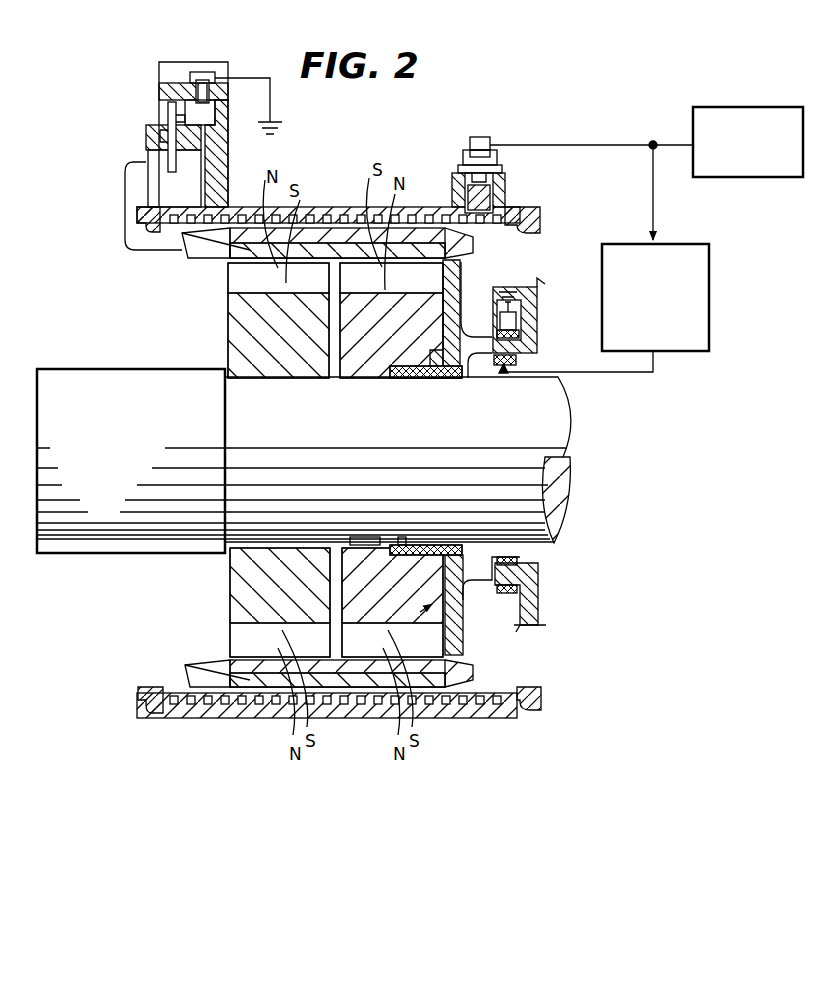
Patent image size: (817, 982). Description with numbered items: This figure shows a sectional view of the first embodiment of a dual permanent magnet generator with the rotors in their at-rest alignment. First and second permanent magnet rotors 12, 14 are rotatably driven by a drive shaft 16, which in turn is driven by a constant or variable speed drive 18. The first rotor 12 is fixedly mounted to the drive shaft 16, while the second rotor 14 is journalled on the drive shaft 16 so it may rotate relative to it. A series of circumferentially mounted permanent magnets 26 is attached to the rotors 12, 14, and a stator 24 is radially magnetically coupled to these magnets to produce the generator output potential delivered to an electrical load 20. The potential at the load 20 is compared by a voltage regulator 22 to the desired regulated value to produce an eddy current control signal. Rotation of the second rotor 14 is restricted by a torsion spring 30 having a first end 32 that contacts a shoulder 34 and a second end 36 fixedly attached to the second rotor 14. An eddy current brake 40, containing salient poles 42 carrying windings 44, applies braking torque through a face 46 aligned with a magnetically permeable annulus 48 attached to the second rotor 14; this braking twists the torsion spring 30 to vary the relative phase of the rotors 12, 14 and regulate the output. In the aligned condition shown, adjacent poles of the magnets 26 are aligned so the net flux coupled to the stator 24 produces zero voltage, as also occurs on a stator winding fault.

The first permanent magnet rotor 12 is at (226, 333).
The second permanent magnet rotor 14 is at (466, 644).
The drive shaft 16 is at (566, 456).
The constant or variable speed drive 18 is at (94, 530).
The electrical load 20 is at (742, 180).
The voltage regulator 22 is at (642, 335).
The stator 24 is at (216, 654).
The permanent magnets 26 is at (227, 275).
The torsion spring 30 is at (406, 384).
The first end 32 is at (353, 537).
The shoulder 34 is at (373, 540).
The second end 36 is at (478, 365).
The eddy current brake 40 is at (557, 588).
The salient poles 42 is at (540, 586).
The windings 44 is at (517, 558).
The face 46 is at (466, 276).
The magnetically permeable annulus 48 is at (466, 609).